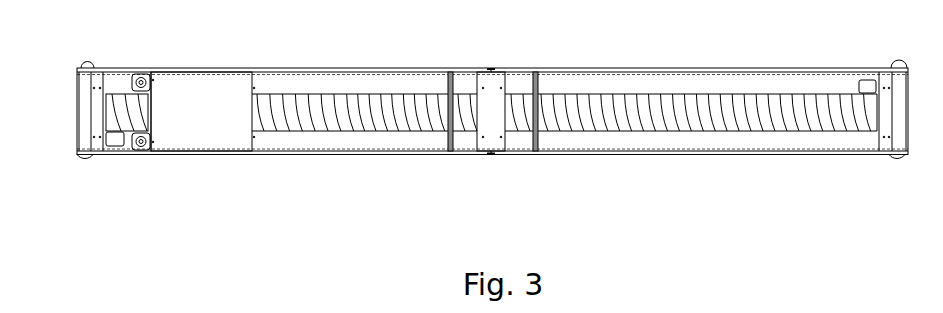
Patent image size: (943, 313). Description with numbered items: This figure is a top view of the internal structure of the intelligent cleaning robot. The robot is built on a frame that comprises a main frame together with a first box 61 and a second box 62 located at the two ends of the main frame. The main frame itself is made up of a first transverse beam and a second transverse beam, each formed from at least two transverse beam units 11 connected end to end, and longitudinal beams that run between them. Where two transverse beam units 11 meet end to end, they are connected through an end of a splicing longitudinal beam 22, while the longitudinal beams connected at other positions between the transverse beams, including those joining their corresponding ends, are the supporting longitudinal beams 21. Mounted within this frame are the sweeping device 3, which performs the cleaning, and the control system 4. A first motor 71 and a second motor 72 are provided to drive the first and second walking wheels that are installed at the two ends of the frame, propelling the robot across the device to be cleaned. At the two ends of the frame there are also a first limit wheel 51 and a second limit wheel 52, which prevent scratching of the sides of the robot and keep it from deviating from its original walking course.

The sweeping device 3 is at (297, 107).
The control system 4 is at (205, 87).
The transverse beam unit 11 is at (368, 70).
The supporting longitudinal beam 21 is at (101, 82).
The splicing longitudinal beam 22 is at (491, 85).
The first limit wheel 51 is at (88, 62).
The second limit wheel 52 is at (903, 65).
The first box 61 is at (80, 92).
The second box 62 is at (908, 118).
The first motor 71 is at (117, 146).
The second motor 72 is at (866, 80).